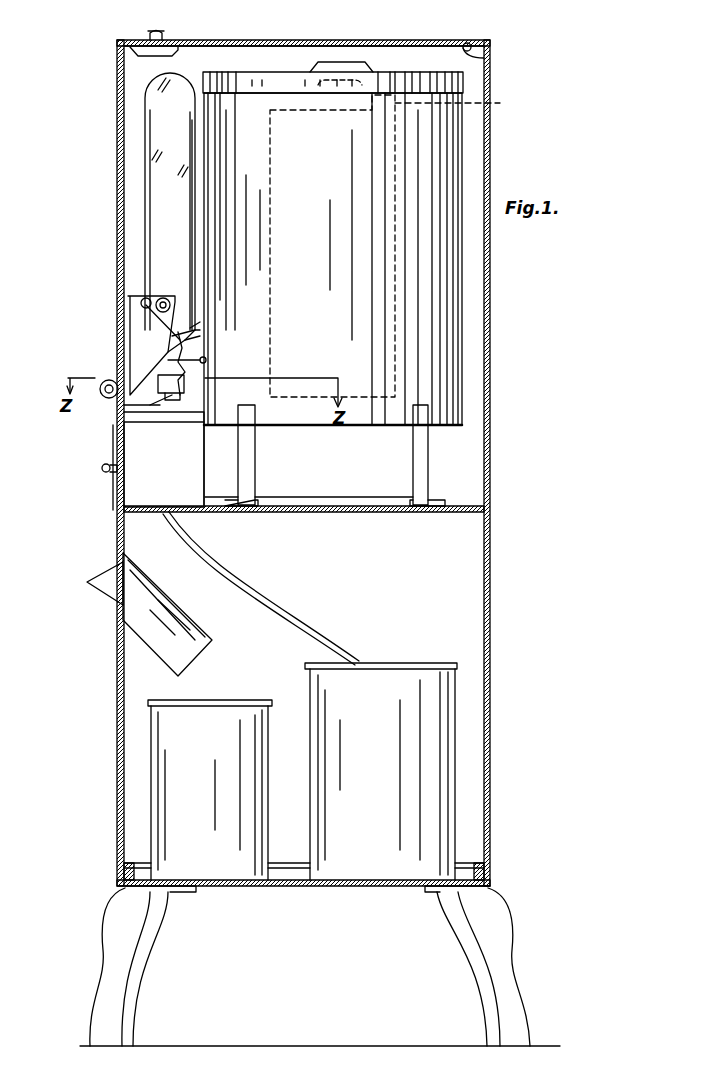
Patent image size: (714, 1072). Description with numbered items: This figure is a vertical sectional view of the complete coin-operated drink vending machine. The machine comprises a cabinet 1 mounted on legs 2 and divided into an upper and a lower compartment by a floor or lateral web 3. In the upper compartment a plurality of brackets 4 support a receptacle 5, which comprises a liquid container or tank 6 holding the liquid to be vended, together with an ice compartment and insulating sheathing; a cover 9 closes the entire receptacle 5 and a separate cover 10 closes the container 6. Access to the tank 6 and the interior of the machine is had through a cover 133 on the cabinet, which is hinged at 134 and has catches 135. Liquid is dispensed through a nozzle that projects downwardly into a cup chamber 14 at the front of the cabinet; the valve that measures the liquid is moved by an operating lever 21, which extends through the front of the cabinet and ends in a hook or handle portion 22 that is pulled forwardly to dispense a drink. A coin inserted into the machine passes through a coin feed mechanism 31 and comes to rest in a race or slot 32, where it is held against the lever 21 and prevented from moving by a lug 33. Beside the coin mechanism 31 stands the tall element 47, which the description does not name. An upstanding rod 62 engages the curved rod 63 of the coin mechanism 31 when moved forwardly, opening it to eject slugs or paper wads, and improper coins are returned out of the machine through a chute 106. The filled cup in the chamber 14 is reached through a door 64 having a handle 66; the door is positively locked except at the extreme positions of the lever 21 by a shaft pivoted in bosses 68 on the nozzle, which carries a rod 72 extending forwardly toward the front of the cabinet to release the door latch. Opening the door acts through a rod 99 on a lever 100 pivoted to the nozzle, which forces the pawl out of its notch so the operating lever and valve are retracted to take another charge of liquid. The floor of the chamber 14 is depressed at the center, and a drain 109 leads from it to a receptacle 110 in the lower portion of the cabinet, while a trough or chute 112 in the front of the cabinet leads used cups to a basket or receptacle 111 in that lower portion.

The cabinet 1 is at (487, 580).
The legs 2 is at (130, 930).
The floor or lateral web 3 is at (385, 514).
The brackets 4 is at (258, 480).
The receptacle 5 is at (447, 326).
The liquid container or tank 6 is at (442, 146).
The cover 9 is at (462, 84).
The cover 10 is at (463, 100).
The chamber 14 is at (137, 480).
The operating lever 21 is at (148, 410).
The hook or handle portion 22 is at (135, 412).
The coin feed mechanism 31 is at (142, 318).
The race or slot 32 is at (130, 420).
The lug 33 is at (158, 290).
The glass tube 47 is at (152, 158).
The upstanding rod 62 is at (190, 328).
The curved rod 63 is at (185, 340).
The door 64 is at (116, 502).
The handle 66 is at (102, 470).
The bosses 68 is at (205, 358).
The rod 72 is at (165, 350).
The rod 99 is at (170, 408).
The lever 100 is at (164, 464).
The chute 106 is at (135, 355).
The drain 109 is at (320, 632).
The receptacle 110 is at (457, 718).
The basket or receptacle 111 is at (173, 825).
The trough or chute 112 is at (110, 605).
The cover 133 is at (410, 36).
The hinge 134 is at (476, 56).
The catches 135 is at (135, 58).